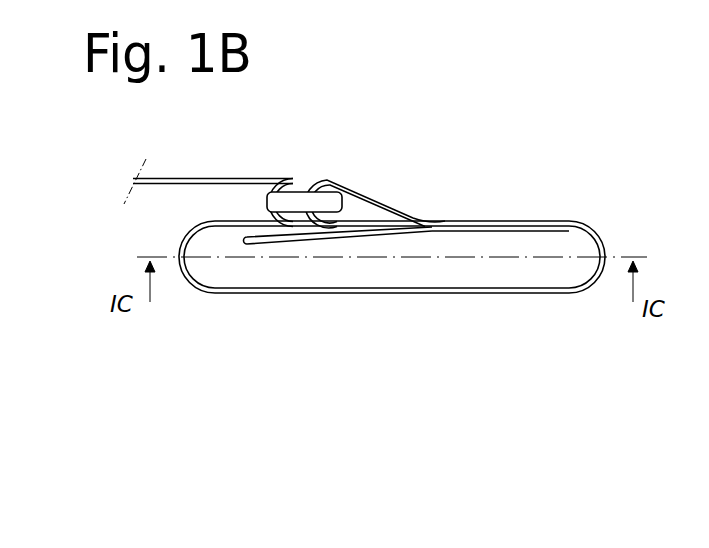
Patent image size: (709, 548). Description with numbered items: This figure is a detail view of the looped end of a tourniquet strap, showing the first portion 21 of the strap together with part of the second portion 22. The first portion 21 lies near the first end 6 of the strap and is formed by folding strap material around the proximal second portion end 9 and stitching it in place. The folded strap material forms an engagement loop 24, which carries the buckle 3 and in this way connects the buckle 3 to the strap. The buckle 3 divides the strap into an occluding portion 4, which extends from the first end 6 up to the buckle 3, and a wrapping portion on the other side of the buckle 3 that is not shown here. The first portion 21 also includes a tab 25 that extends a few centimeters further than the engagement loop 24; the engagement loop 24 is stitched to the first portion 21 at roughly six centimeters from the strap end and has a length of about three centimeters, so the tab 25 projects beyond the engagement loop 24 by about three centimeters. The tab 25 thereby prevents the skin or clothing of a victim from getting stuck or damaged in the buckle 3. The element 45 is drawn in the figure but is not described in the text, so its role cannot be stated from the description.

The occluding portion 4 is at (394, 255).
The tubular sleeve 45 is at (330, 294).
The first end 6 is at (241, 236).
The second portion 22 is at (596, 232).
The first portion 21 is at (510, 220).
The proximal second portion end 9 is at (447, 220).
The tab 25 is at (245, 238).
The engagement loop 24 is at (360, 190).
The buckle 3 is at (298, 192).